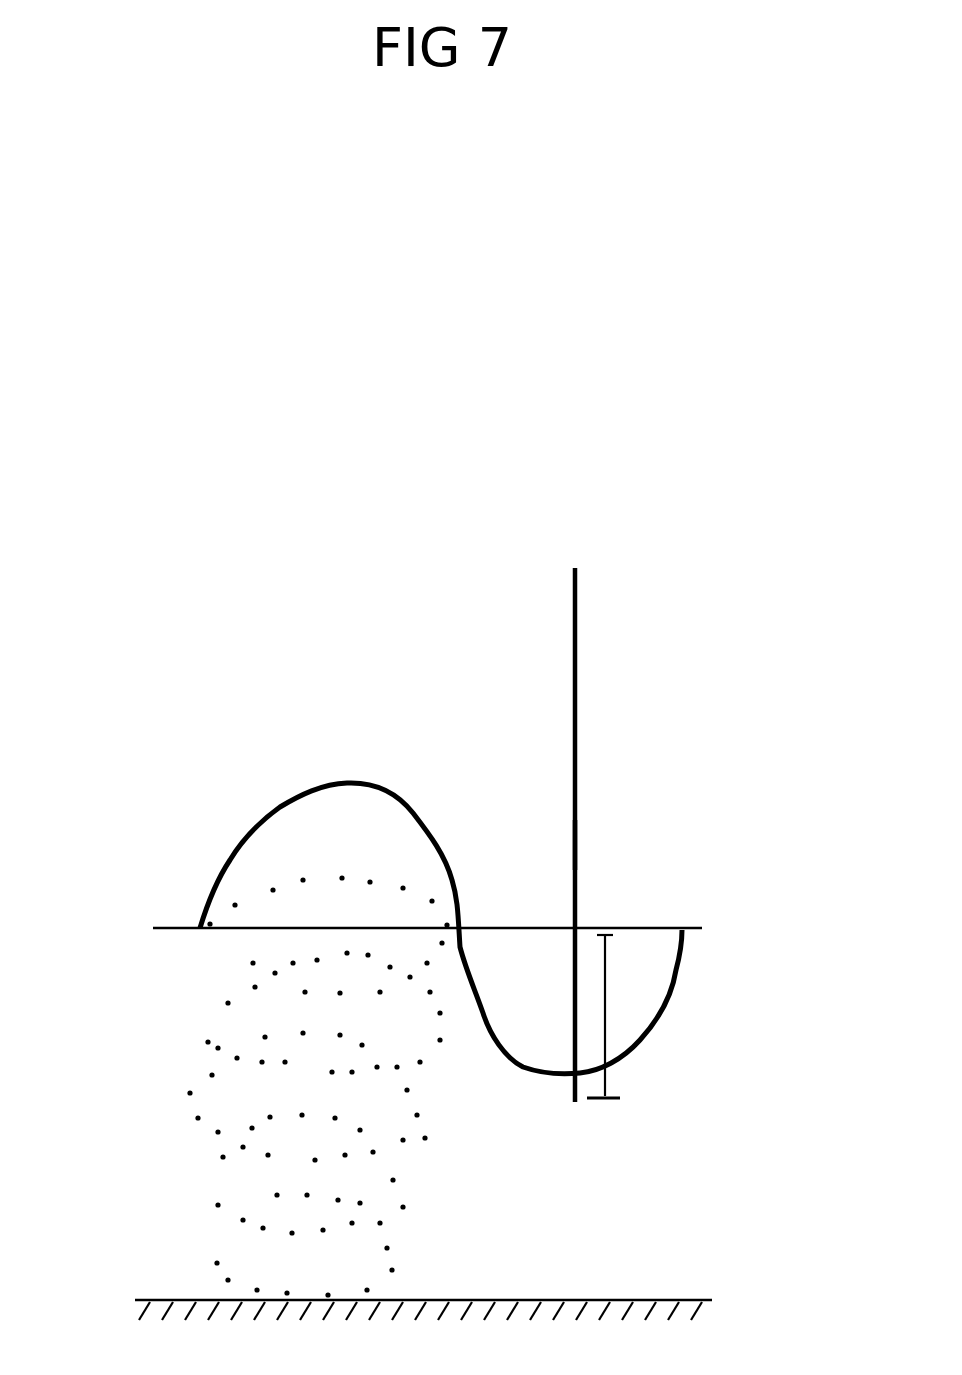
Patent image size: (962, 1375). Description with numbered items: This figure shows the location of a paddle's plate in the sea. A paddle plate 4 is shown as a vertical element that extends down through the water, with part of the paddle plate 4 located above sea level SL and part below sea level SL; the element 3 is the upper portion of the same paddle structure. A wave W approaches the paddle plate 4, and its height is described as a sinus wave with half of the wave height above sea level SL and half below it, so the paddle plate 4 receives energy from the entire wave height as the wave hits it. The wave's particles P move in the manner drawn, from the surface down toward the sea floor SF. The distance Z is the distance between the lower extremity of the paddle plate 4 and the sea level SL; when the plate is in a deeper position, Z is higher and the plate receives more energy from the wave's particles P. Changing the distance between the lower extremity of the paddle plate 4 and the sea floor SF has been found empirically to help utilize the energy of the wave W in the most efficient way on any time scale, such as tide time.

The sensor probe 3 is at (575, 630).
The paddle plate 4 is at (575, 842).
The wave W is at (283, 810).
The sea level SL is at (702, 928).
The sea floor SF is at (710, 1299).
The distance between the lower extremity of the paddle plate and the sea level Z is at (615, 1016).
The wave's particles P is at (225, 945).